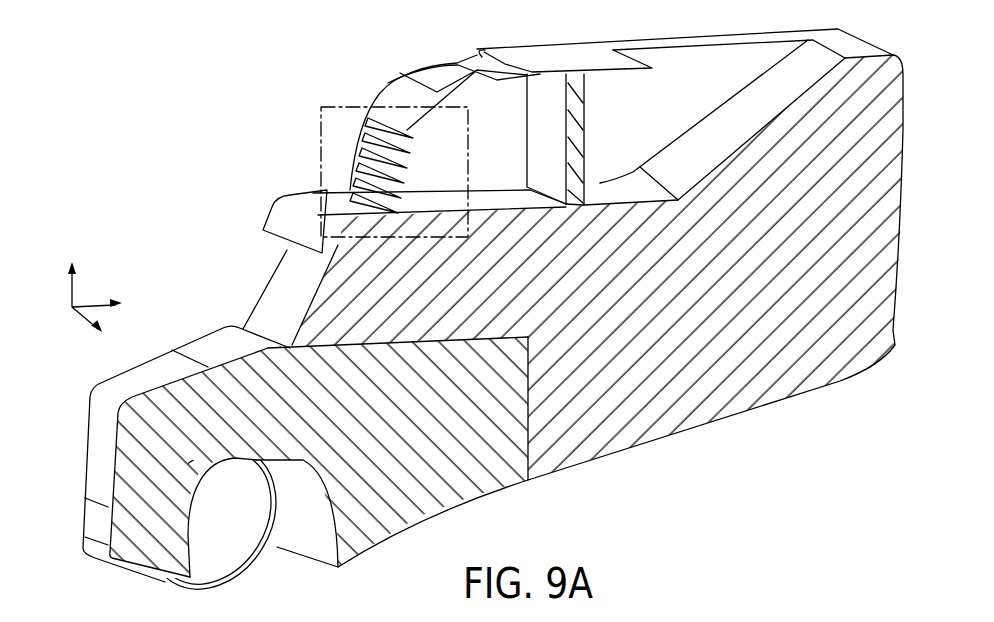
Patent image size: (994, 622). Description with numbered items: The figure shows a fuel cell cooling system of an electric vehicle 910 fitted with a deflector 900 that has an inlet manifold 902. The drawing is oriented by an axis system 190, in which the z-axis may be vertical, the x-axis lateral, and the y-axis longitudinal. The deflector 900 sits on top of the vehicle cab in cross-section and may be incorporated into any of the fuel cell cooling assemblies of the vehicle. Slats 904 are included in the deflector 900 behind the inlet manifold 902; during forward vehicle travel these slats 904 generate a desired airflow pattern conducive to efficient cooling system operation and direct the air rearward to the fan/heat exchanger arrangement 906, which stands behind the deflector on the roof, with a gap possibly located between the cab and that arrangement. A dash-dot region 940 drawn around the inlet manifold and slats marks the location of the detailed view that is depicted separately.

The electric vehicle 910 is at (117, 89).
The axis system 190 is at (115, 268).
The region 940 is at (315, 110).
The deflector 900 is at (281, 148).
The inlet manifold 902 is at (351, 137).
The slats 904 is at (345, 170).
The fan/heat exchanger arrangement 906 is at (577, 82).